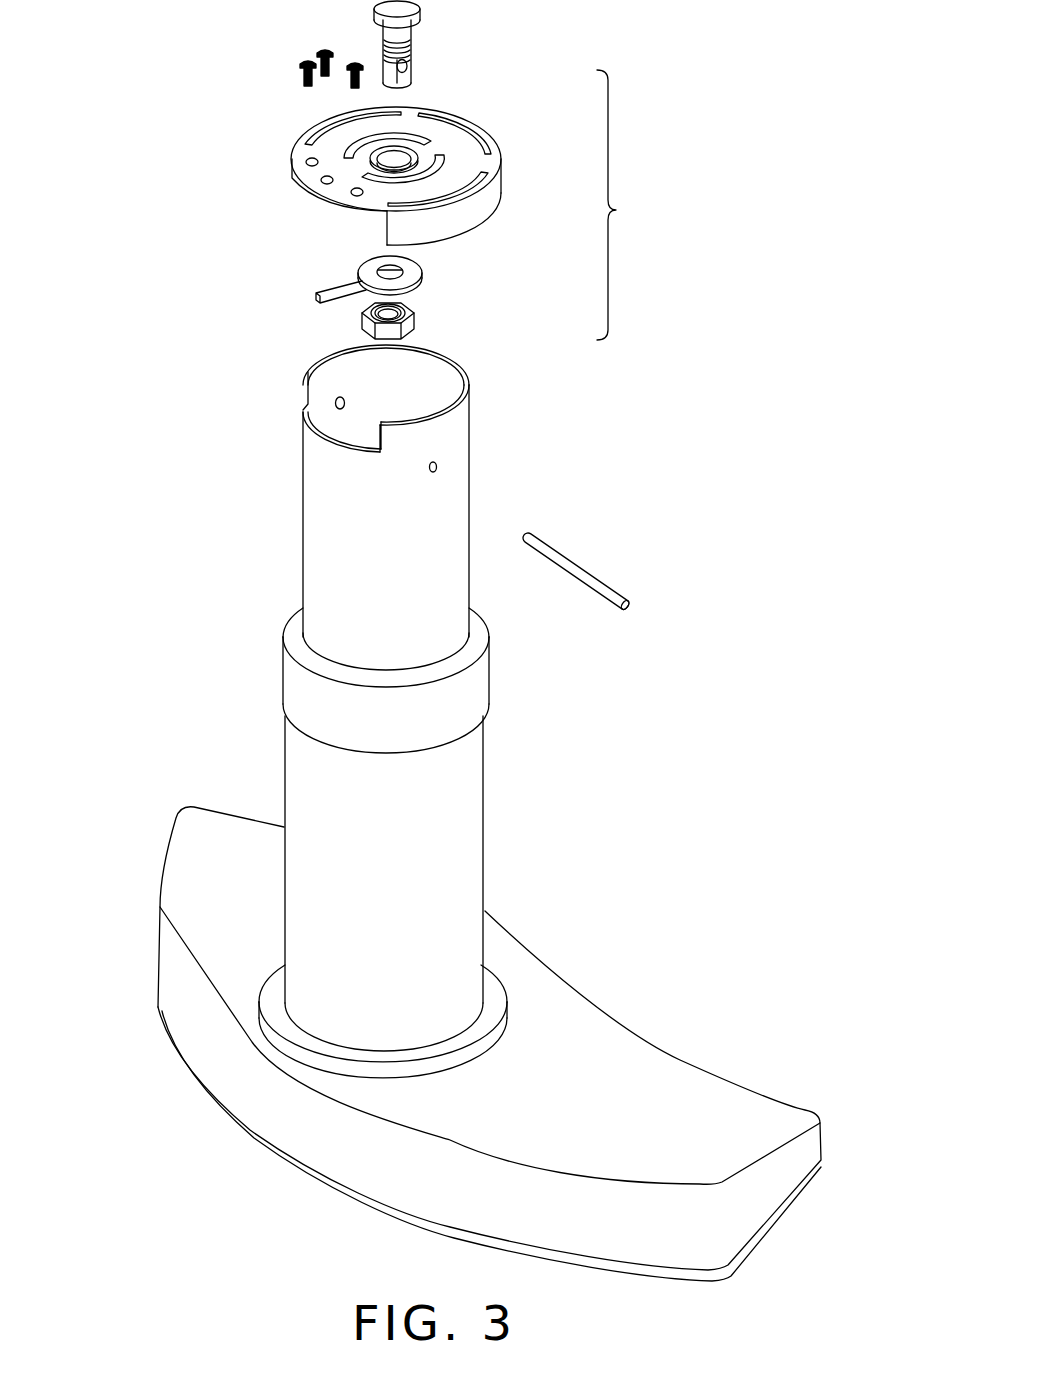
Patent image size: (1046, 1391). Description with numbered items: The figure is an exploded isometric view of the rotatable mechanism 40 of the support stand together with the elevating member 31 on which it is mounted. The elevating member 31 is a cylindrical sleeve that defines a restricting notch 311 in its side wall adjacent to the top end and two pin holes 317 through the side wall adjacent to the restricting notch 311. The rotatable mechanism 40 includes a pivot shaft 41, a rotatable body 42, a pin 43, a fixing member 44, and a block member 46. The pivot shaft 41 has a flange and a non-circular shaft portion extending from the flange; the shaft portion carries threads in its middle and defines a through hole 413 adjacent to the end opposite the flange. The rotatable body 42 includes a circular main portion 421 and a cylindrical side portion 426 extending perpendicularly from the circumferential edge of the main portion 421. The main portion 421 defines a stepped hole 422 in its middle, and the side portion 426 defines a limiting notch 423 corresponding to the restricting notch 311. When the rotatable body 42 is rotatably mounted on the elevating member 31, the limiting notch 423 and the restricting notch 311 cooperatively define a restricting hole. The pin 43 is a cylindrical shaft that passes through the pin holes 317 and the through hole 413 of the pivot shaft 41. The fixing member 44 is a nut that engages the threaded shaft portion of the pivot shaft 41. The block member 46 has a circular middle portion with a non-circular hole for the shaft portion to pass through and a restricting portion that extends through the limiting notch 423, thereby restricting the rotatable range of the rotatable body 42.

The elevating member 31 is at (441, 503).
The restricting notch 311 is at (308, 395).
The pin holes 317 is at (438, 467).
The rotatable mechanism 40 is at (629, 205).
The pivot shaft 41 is at (417, 76).
The through hole 413 is at (383, 62).
The rotatable body 42 is at (363, 174).
The main portion 421 is at (335, 159).
The stepped hole 422 is at (380, 160).
The limiting notch 423 is at (320, 210).
The side portion 426 is at (405, 222).
The pin 43 is at (610, 597).
The fixing member 44 is at (408, 327).
The block member 46 is at (412, 273).